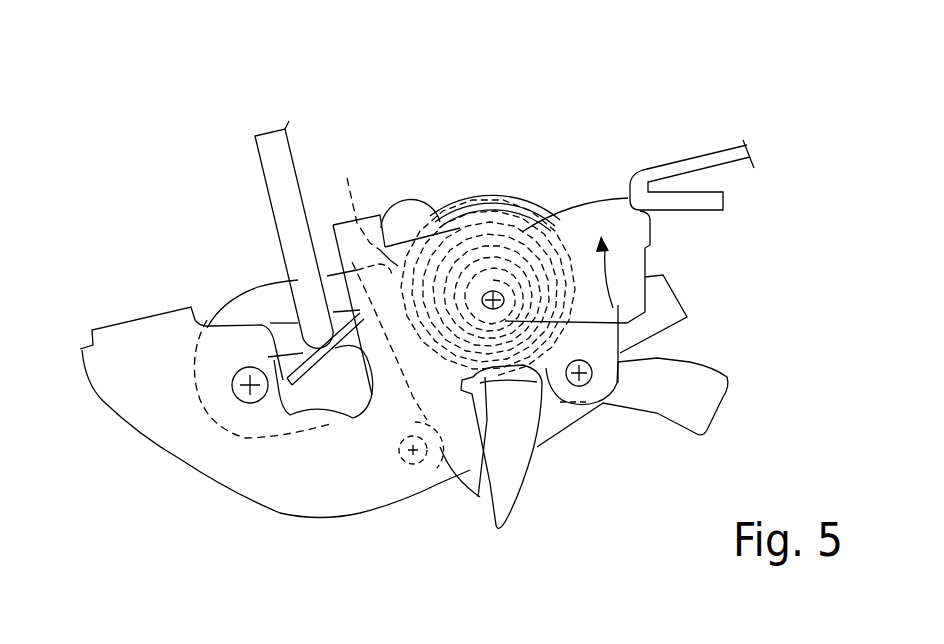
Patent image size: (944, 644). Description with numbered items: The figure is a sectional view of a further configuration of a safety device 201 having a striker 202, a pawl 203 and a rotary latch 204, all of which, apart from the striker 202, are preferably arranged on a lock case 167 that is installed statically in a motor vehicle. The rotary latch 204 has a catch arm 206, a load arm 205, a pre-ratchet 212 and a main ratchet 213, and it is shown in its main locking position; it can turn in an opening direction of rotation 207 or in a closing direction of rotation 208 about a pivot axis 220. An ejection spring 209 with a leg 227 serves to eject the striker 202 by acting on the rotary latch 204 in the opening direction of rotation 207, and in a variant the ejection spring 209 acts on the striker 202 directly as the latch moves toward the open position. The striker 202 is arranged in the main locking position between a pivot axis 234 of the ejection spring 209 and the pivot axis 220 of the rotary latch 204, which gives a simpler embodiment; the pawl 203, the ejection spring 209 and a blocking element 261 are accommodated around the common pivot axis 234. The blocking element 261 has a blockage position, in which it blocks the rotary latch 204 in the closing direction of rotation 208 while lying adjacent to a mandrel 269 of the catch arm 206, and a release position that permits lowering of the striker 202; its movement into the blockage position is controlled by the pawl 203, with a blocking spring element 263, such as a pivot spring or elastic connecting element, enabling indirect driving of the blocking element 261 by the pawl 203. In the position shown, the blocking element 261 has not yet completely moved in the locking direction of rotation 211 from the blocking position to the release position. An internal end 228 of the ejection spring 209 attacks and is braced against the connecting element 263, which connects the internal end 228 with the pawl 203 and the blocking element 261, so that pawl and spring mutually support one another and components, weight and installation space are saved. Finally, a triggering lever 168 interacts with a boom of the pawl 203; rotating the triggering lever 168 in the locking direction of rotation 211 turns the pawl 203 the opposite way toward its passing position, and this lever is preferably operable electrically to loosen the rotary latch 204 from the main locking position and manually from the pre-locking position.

The safety device 201 is at (150, 110).
The striker 202 is at (280, 163).
The pawl 203 is at (405, 213).
The rotary latch 204 is at (197, 387).
The load arm 205 is at (262, 307).
The catch arm 206 is at (325, 397).
The opening direction of rotation 207 is at (92, 310).
The closing direction of rotation 208 is at (126, 283).
The ejection spring 209 is at (468, 202).
The locking direction of rotation 211 is at (610, 267).
The pre-ratchet 212 is at (503, 483).
The main ratchet 213 is at (375, 284).
The pivot axis of the rotary latch 220 is at (250, 392).
The leg 227 is at (376, 420).
The internal end 228 is at (493, 230).
The pivot axis 234 is at (493, 293).
The lock case 167 is at (608, 217).
The triggering lever 168 is at (712, 398).
The blocking element 261 is at (512, 485).
The blocking spring element 263 is at (620, 332).
The mandrel 269 is at (425, 462).